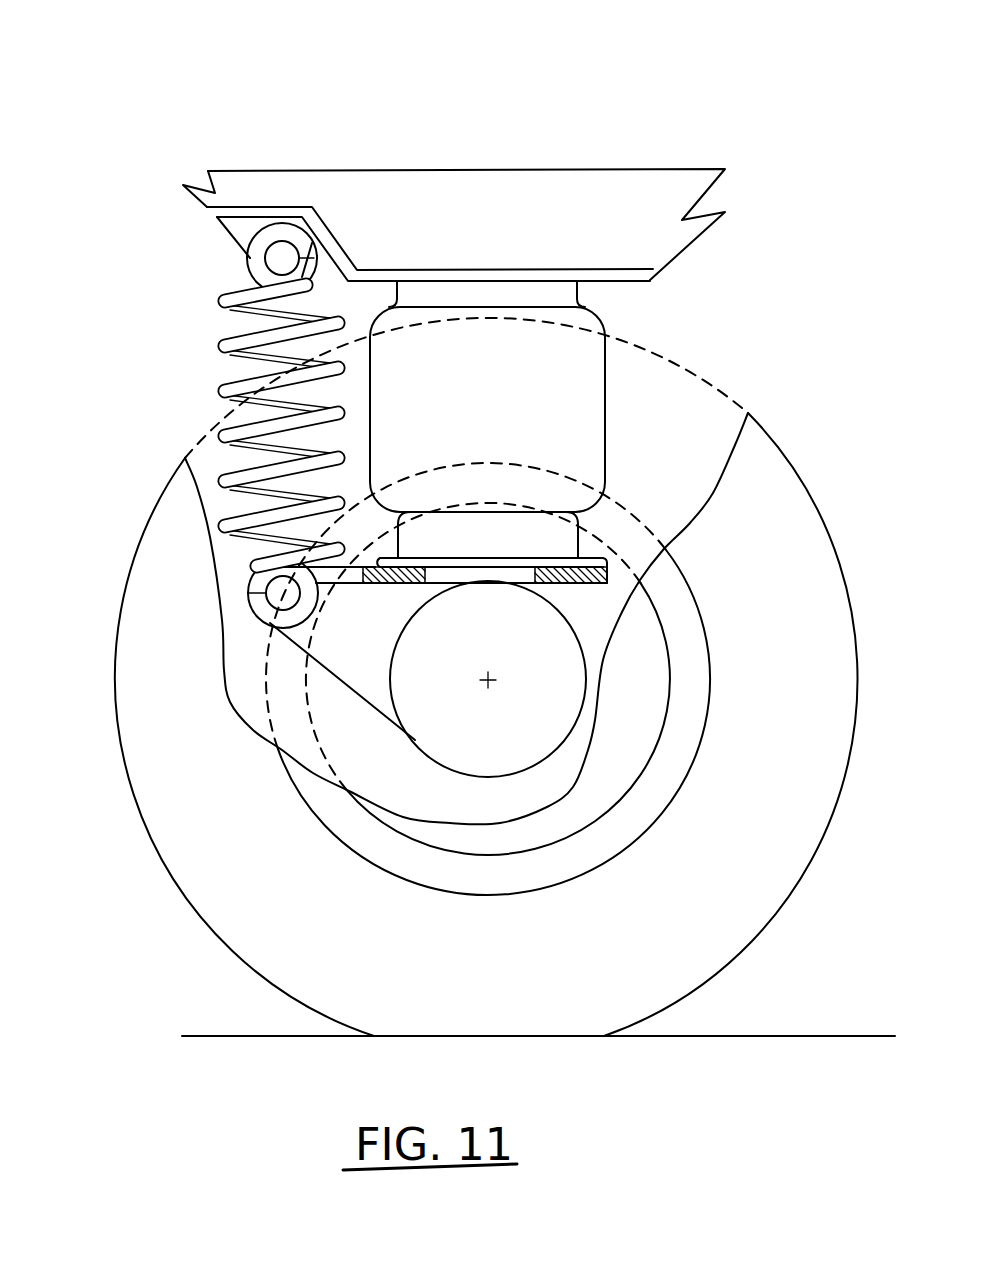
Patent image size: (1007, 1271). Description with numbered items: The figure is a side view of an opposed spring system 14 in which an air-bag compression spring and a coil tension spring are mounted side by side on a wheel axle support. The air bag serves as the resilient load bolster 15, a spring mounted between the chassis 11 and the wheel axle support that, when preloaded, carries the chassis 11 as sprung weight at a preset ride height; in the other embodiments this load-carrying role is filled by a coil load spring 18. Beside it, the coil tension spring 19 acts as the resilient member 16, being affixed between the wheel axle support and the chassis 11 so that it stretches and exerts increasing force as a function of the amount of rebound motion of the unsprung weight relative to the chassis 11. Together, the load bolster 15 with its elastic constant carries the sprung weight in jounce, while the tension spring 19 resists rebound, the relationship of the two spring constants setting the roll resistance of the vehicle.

The chassis 11 is at (633, 170).
The opposed spring system 14 is at (543, 126).
The resilient load bolster 15 is at (607, 352).
The resilient member 16 is at (222, 301).
The coil load spring 18 is at (610, 383).
The coil tension spring 19 is at (215, 350).